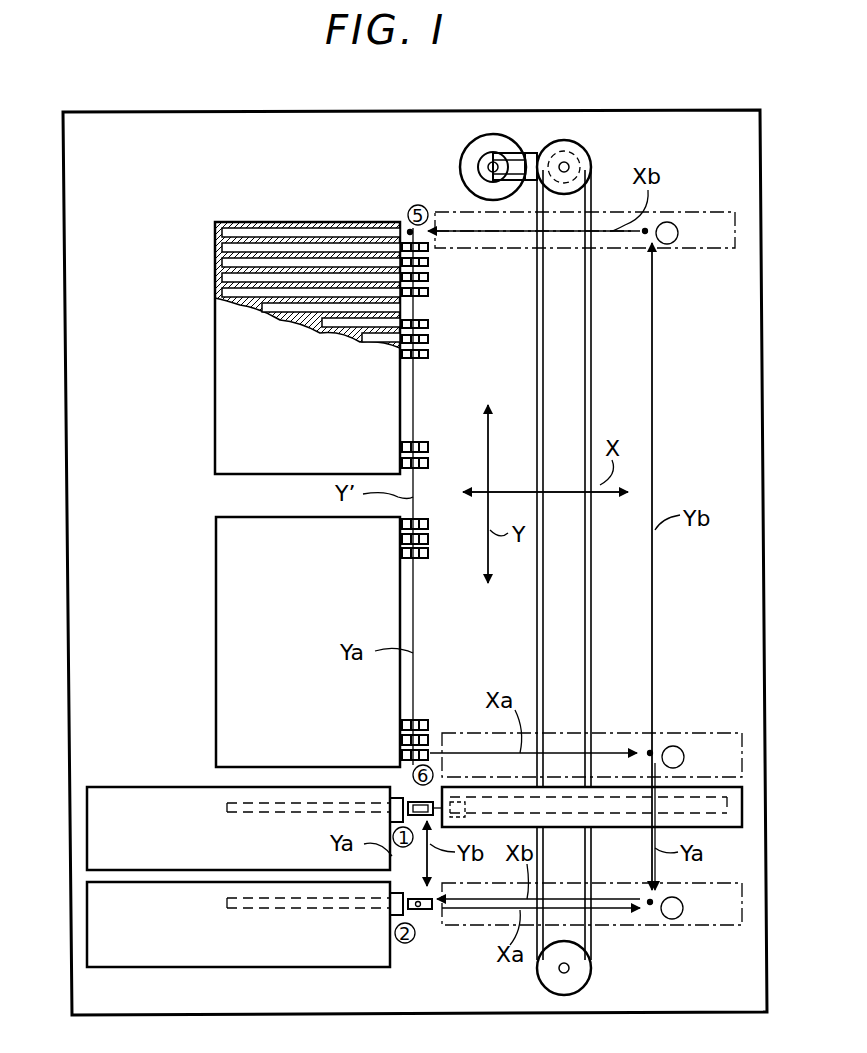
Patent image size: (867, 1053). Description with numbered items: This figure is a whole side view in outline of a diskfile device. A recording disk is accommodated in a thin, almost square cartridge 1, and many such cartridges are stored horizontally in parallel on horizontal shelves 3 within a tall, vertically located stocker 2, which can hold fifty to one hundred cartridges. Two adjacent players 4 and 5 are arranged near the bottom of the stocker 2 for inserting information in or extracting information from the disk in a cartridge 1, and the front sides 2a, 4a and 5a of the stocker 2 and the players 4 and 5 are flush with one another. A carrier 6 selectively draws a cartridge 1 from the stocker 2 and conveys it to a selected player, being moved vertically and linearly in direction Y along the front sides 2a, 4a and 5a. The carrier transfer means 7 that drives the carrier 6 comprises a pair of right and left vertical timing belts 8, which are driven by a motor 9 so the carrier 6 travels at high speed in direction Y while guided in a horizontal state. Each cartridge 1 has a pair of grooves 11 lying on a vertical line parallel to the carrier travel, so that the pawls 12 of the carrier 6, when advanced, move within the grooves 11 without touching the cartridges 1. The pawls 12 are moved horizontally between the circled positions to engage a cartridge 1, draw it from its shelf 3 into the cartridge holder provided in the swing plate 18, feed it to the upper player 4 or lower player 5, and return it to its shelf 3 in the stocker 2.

The cartridge 1 is at (308, 268).
The stocker 2 is at (228, 432).
The front side of the stocker 2a is at (445, 355).
The shelf 3 is at (260, 257).
The upper player 4 is at (118, 805).
The front side of the upper player 4a is at (395, 806).
The lower player 5 is at (110, 957).
The front side of the lower player 5a is at (418, 914).
The carrier 6 is at (700, 218).
The carrier transfer means 7 is at (603, 395).
The timing belt 8 is at (592, 640).
The motor 9 is at (470, 160).
The groove 11 is at (430, 338).
The pawl 12 is at (413, 803).
The swing plate 18 is at (700, 795).